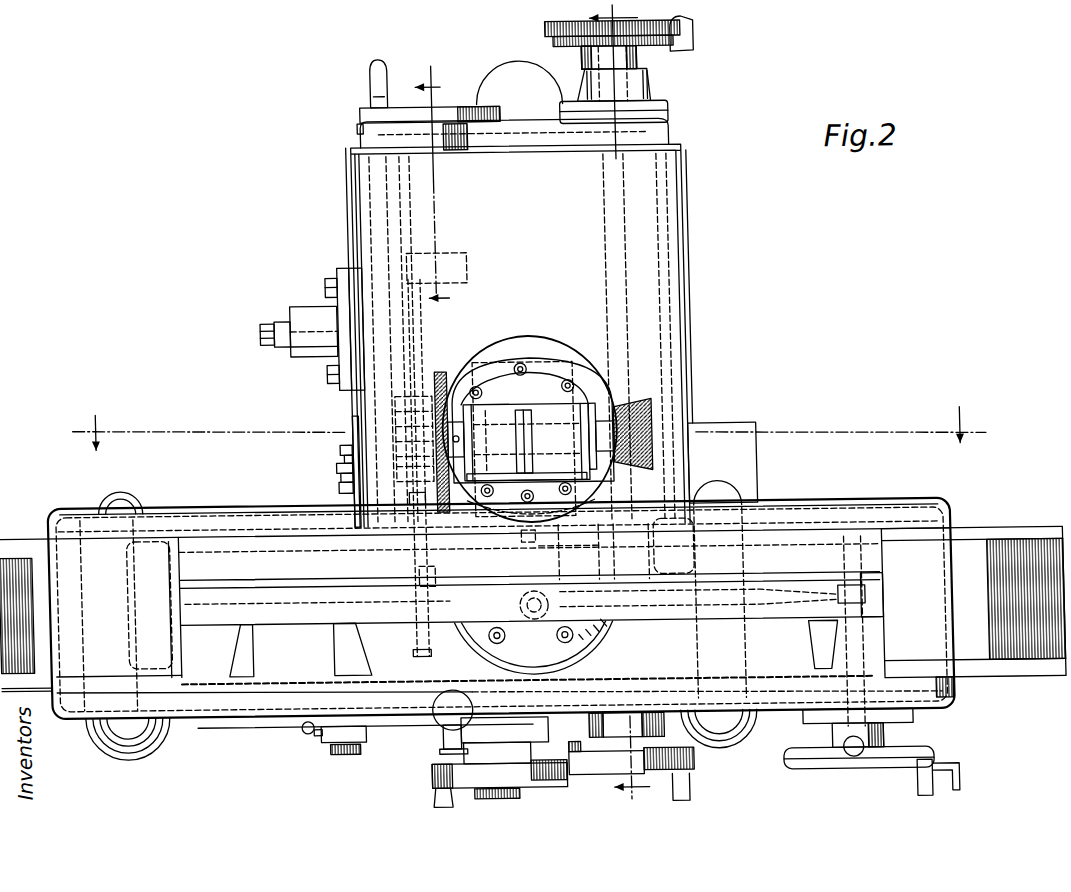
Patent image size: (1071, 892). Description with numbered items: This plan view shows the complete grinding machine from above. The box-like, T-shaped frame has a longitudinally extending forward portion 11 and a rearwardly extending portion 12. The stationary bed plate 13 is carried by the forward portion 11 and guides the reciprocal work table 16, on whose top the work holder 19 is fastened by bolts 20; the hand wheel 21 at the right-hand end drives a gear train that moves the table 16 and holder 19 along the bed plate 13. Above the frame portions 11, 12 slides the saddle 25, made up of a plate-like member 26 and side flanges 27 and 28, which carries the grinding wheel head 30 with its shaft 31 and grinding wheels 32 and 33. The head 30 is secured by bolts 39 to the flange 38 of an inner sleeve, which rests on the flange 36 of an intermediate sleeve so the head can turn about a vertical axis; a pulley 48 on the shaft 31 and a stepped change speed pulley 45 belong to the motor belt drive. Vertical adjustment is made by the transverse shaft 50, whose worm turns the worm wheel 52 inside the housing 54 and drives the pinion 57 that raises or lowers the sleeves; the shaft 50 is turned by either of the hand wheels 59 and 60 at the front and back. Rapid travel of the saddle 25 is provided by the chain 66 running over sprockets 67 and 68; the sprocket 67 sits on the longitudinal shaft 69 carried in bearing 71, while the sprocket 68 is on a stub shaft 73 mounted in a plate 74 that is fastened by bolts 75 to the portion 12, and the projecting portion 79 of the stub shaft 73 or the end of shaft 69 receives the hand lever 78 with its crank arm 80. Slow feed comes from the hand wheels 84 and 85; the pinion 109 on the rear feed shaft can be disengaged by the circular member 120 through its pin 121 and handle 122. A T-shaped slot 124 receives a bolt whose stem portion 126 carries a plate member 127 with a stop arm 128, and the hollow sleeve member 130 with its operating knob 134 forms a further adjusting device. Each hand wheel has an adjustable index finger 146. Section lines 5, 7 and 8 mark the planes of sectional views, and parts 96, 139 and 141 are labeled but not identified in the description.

The section line 5- 5 is at (632, 401).
The section line 7- 7 is at (438, 184).
The section line 8- 8 is at (529, 419).
The longitudinally extending forward portion 11 is at (206, 527).
The rearwardly extending portion 12 is at (362, 212).
The stationary bed plate 13 is at (787, 512).
The reciprocal work table 16 is at (22, 552).
The work holder 19 is at (262, 543).
The bolts 20 is at (490, 640).
The hand wheel 21 is at (828, 758).
The saddle 25 is at (657, 281).
The plate-like member 26 is at (554, 322).
The side flange 27 is at (362, 238).
The side flange 28 is at (692, 331).
The grinding wheel head 30 is at (548, 473).
The shaft 31 is at (503, 424).
The grinding wheel 32 is at (447, 370).
The grinding wheel 33 is at (637, 410).
The flange 36 is at (566, 343).
The flange 38 is at (540, 352).
The bolts 39 is at (524, 363).
The stepped change speed pulley 45 is at (414, 395).
The pulley 48 is at (537, 426).
The shaft 50 is at (636, 318).
The worm wheel 52 is at (665, 548).
The housing 54 is at (575, 549).
The pinion 57 is at (530, 542).
The hand wheel 59 is at (690, 762).
The hand wheel 60 is at (694, 30).
The chain 66 is at (416, 498).
The sprocket 67 is at (430, 582).
The sprocket 68 is at (416, 292).
The shaft 69 is at (660, 602).
The bearing 71 is at (800, 628).
The stub shaft 73 is at (320, 355).
The plate 74 is at (352, 390).
The bolts 75 is at (333, 284).
The hand lever 78 is at (956, 777).
The outwardly projecting portion 79 is at (285, 345).
The crank arm 80 is at (862, 652).
The hand wheel 84 is at (540, 788).
The hand wheel 85 is at (462, 106).
The shaft 96 is at (520, 613).
The pinion 109 is at (488, 798).
The circular member 120 is at (440, 735).
The pin 121 is at (430, 704).
The handle 122 is at (505, 740).
The T-shaped slot 124 is at (350, 443).
The stem portion 126 is at (340, 465).
The plate member 127 is at (348, 456).
The stop arm 128 is at (344, 475).
The hollow sleeve member 130 is at (340, 567).
The operating knob 134 is at (305, 731).
The stop 139 is at (342, 486).
The block 141 is at (327, 742).
The adjustable finger 146 is at (369, 128).